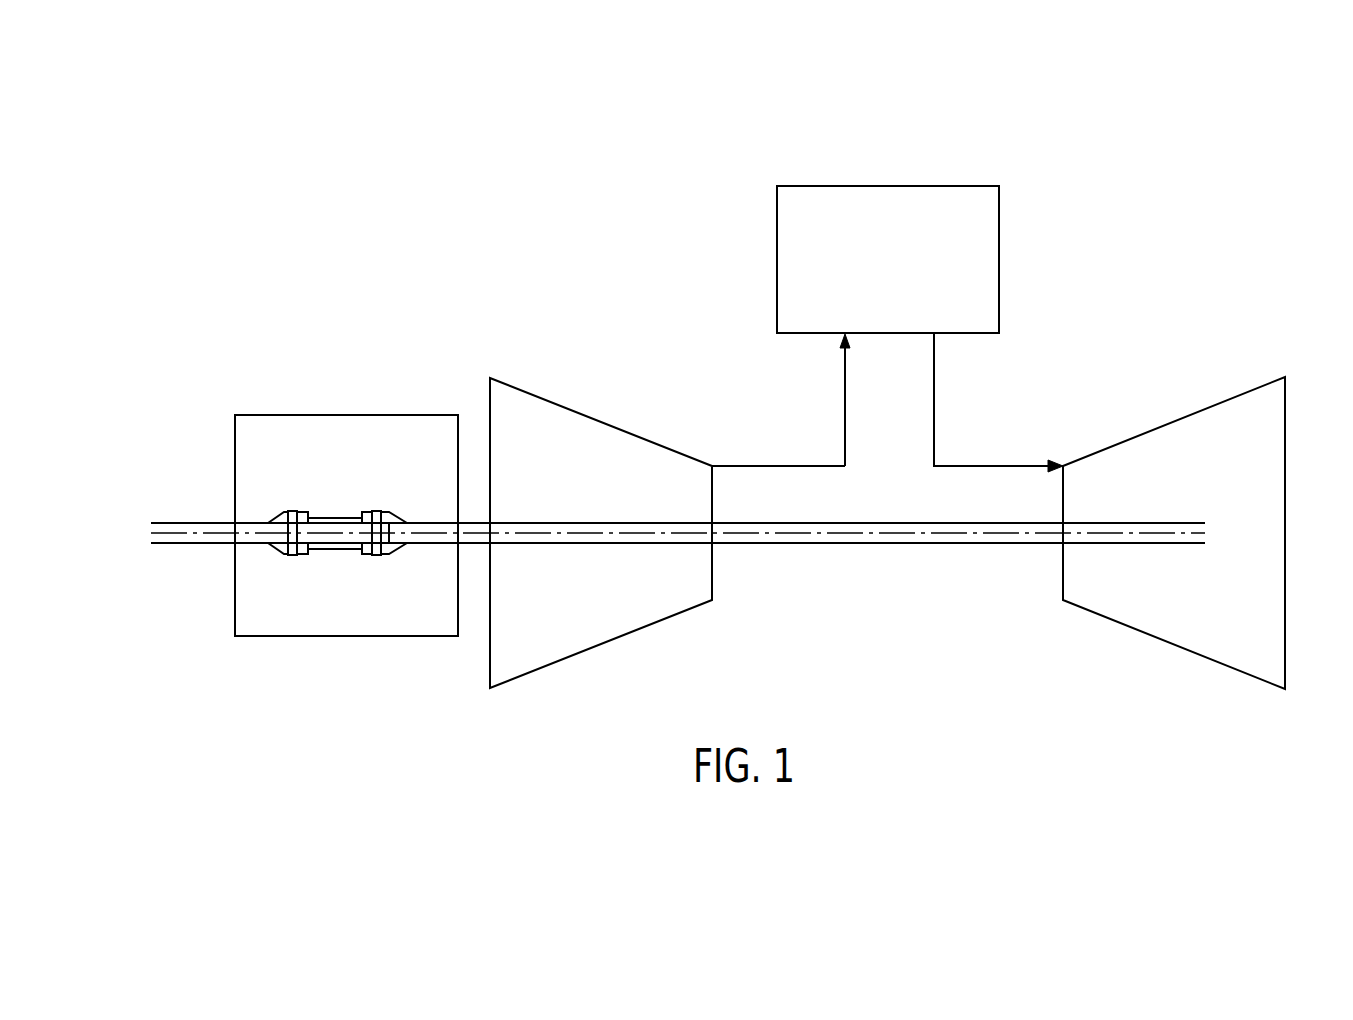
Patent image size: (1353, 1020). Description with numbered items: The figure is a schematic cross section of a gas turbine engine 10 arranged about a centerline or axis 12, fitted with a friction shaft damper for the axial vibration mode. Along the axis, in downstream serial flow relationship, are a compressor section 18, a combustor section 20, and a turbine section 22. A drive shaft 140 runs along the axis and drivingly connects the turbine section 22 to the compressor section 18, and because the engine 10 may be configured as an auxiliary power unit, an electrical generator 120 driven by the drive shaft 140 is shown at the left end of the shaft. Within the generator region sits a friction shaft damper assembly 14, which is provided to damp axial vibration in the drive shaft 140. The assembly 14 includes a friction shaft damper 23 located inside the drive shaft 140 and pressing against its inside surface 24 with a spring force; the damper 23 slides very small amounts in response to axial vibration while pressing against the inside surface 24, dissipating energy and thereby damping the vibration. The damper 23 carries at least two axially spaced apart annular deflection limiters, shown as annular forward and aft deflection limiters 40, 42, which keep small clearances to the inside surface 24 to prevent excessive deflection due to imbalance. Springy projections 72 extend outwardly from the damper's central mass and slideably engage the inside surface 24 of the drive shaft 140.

The gas turbine engine 10 is at (437, 177).
The centerline or axis 12 is at (877, 534).
The friction shaft damper assembly 14 is at (332, 568).
The compressor section 18 is at (581, 497).
The combustor section 20 is at (897, 274).
The turbine section 22 is at (1193, 497).
The friction shaft damper 23 is at (312, 518).
The inside surface 24 is at (350, 515).
The annular forward deflection limiter 40 is at (284, 522).
The annular aft deflection limiter 42 is at (378, 518).
The springy projections 72 is at (381, 563).
The electrical generator 120 is at (286, 449).
The drive shaft 140 is at (975, 544).